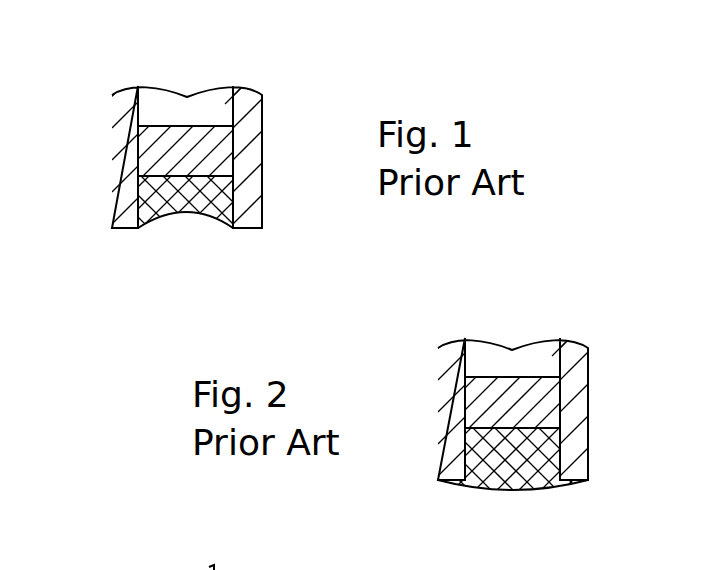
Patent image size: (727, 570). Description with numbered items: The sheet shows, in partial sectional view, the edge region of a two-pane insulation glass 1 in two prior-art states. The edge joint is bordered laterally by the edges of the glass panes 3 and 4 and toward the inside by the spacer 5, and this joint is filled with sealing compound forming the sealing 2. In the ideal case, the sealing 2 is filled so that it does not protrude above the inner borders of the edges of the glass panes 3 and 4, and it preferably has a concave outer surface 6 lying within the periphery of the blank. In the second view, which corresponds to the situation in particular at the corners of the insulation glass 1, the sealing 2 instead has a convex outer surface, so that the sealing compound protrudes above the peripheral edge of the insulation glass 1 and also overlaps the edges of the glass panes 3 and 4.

In FIG. 1, the two-pane insulation glass 1 is at (187, 86).
In FIG. 2, the two-pane insulation glass 1 is at (514, 336).
In FIG. 1, the sealing 2 is at (160, 193).
In FIG. 2, the sealing 2 is at (488, 443).
In FIG. 1, the glass pane 3 is at (127, 180).
In FIG. 2, the glass pane 3 is at (450, 432).
In FIG. 1, the glass pane 4 is at (243, 182).
In FIG. 2, the glass pane 4 is at (577, 432).
In FIG. 1, the spacer 5 is at (167, 153).
In FIG. 2, the spacer 5 is at (493, 405).
In FIG. 1, the concave outer surface 6 is at (195, 213).
In FIG. 2, the concave outer surface 6 is at (505, 493).